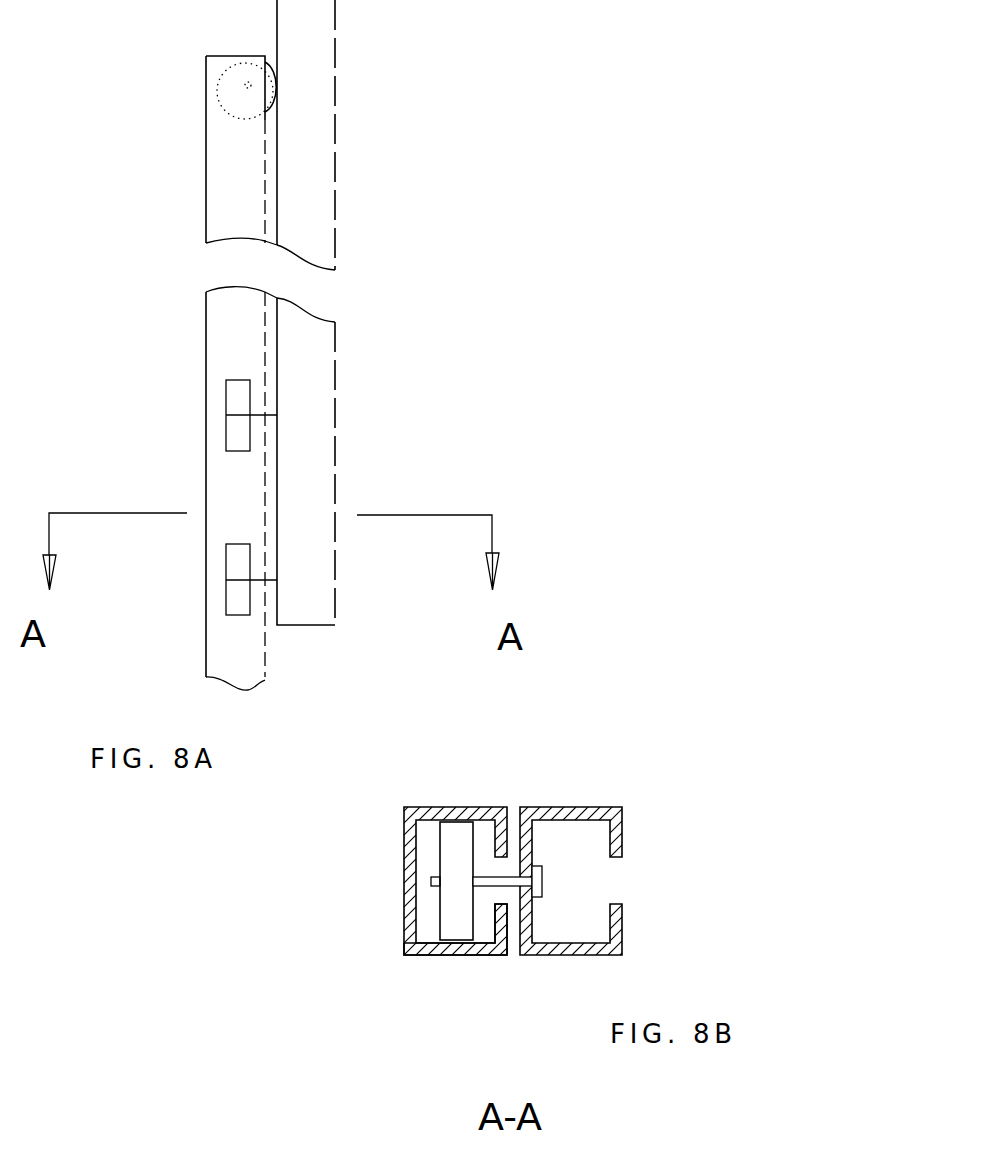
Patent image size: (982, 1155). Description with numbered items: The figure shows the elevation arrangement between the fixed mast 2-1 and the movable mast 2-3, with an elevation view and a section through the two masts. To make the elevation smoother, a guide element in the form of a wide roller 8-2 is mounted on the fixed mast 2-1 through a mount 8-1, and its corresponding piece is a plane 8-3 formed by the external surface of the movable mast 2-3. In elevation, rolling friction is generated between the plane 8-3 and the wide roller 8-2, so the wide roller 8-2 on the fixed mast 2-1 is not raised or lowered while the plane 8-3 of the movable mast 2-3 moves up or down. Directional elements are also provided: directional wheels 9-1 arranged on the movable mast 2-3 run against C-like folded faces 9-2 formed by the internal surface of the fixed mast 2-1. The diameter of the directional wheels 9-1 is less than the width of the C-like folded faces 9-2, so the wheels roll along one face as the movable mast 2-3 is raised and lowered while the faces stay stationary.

In FIG. 8A, the fixed mast 2-1 is at (227, 317).
In FIG. 8B, the fixed mast 2-1 is at (410, 853).
In FIG. 8A, the movable mast 2-3 is at (300, 335).
In FIG. 8B, the movable mast 2-3 is at (527, 852).
In FIG. 8A, the mount 8-1 is at (218, 118).
In FIG. 8A, the wide roller 8-2 is at (265, 101).
In FIG. 8B, the plane 8-3 is at (513, 908).
In FIG. 8A, the directional wheel 9-1 is at (238, 435).
In FIG. 8B, the directional wheel 9-1 is at (455, 867).
In FIG. 8B, the C-like folded face 9-2 is at (430, 822).